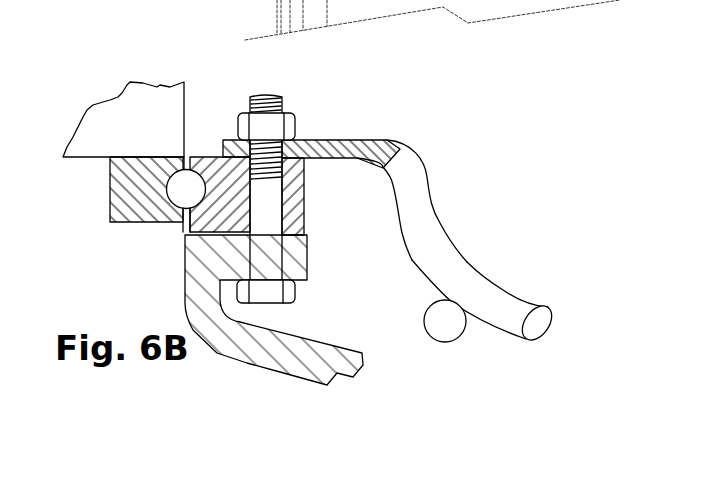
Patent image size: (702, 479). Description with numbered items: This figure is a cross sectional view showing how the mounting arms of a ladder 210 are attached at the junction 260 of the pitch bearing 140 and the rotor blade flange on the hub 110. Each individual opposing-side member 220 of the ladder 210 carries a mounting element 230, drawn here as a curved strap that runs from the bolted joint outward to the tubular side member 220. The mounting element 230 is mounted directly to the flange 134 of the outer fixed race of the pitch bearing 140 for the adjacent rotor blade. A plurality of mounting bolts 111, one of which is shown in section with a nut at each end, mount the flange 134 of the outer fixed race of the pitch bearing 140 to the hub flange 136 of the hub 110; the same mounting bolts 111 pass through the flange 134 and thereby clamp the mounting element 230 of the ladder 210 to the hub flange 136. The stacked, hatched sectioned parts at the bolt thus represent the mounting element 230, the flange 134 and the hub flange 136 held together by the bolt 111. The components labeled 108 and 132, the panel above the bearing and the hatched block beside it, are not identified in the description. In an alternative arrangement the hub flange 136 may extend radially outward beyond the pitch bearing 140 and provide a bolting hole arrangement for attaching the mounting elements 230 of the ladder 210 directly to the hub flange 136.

The body panel 108 is at (155, 83).
The mounting bolts 111 is at (282, 103).
The spacer block 132 is at (110, 194).
The flange 134 is at (305, 177).
The hub flange 136 is at (310, 270).
The pitch bearing 140 is at (138, 232).
The junction 260 is at (320, 243).
The mounting elements 230 is at (420, 160).
The ladder 210 is at (523, 290).
The opposing-side member 220 is at (465, 333).
The hub 110 is at (358, 352).